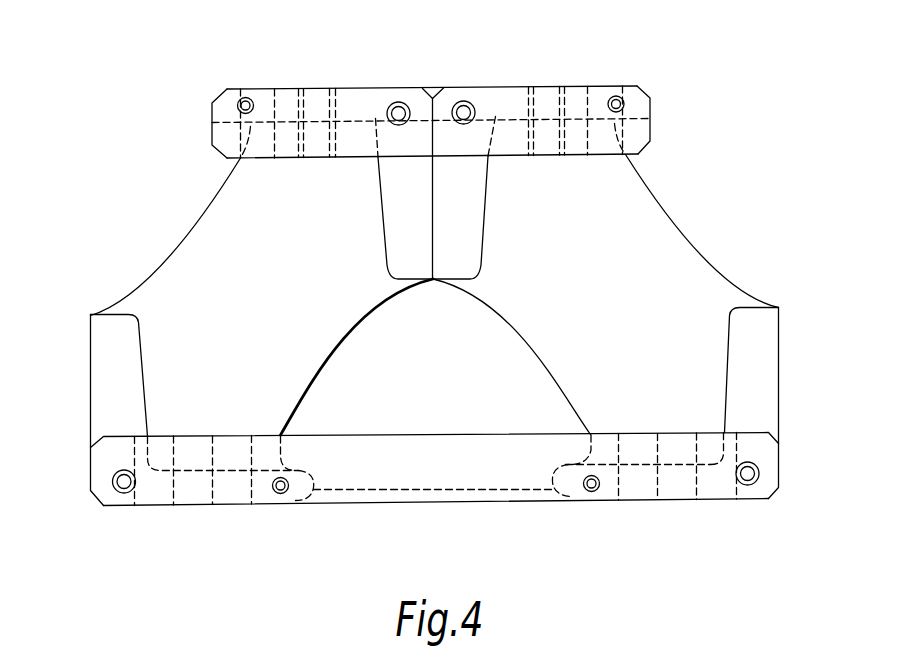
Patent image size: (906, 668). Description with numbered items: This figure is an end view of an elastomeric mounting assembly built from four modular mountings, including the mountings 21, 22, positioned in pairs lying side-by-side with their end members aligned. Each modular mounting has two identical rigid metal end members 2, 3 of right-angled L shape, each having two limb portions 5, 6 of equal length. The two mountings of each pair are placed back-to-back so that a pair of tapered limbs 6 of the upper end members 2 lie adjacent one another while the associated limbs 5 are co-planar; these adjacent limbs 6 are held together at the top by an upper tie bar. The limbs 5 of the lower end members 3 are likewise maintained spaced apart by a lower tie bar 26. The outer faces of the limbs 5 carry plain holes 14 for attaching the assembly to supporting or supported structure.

The end member 2 is at (262, 74).
The end member 3 is at (98, 366).
The limb portion 5 is at (366, 92).
The limb portion 6 is at (392, 214).
The plain holes 14 is at (178, 500).
The modular mounting 21 is at (650, 100).
The modular mounting 22 is at (200, 104).
The lower tie bar 26 is at (342, 462).